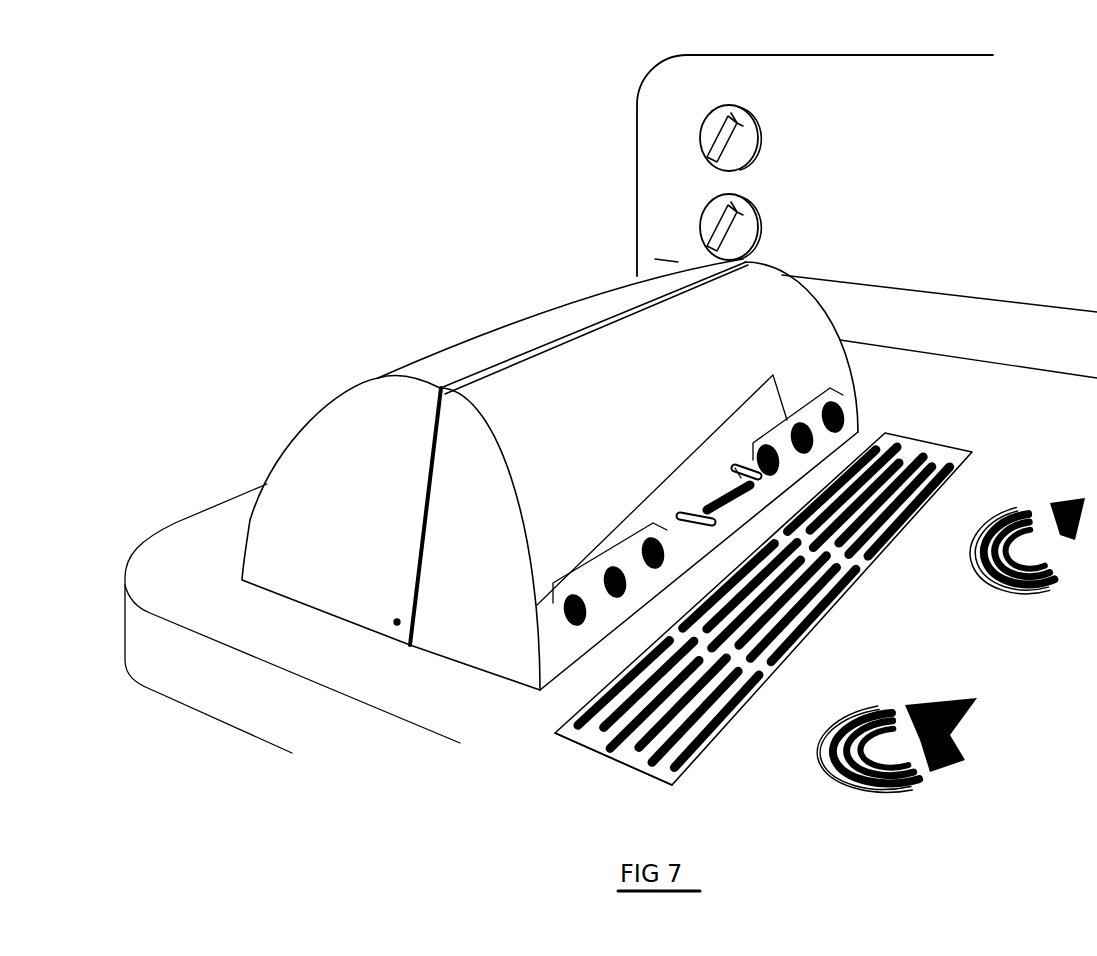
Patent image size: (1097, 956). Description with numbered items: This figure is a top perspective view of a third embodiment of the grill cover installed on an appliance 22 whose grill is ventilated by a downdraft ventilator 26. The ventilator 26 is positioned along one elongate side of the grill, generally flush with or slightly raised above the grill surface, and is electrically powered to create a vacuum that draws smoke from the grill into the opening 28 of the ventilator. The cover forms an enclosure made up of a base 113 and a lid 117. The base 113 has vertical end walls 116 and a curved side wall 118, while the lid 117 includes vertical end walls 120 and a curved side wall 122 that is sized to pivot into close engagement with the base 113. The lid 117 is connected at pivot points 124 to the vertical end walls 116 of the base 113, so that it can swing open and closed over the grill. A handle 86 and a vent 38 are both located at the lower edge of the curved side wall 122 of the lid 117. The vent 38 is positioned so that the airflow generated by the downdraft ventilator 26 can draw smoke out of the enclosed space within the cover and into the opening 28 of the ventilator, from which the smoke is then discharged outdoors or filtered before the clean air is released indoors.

The appliance 22 is at (818, 75).
The downdraft ventilator 26 is at (837, 603).
The opening of the ventilator 28 is at (607, 753).
The vent 38 is at (775, 375).
The handle 86 is at (700, 507).
The base 113 is at (318, 410).
The vertical end walls 116 is at (345, 458).
The lid 117 is at (633, 390).
The curved side wall 118 is at (475, 360).
The vertical end walls 120 is at (478, 555).
The curved side wall 122 is at (773, 300).
The pivot points 124 is at (394, 621).